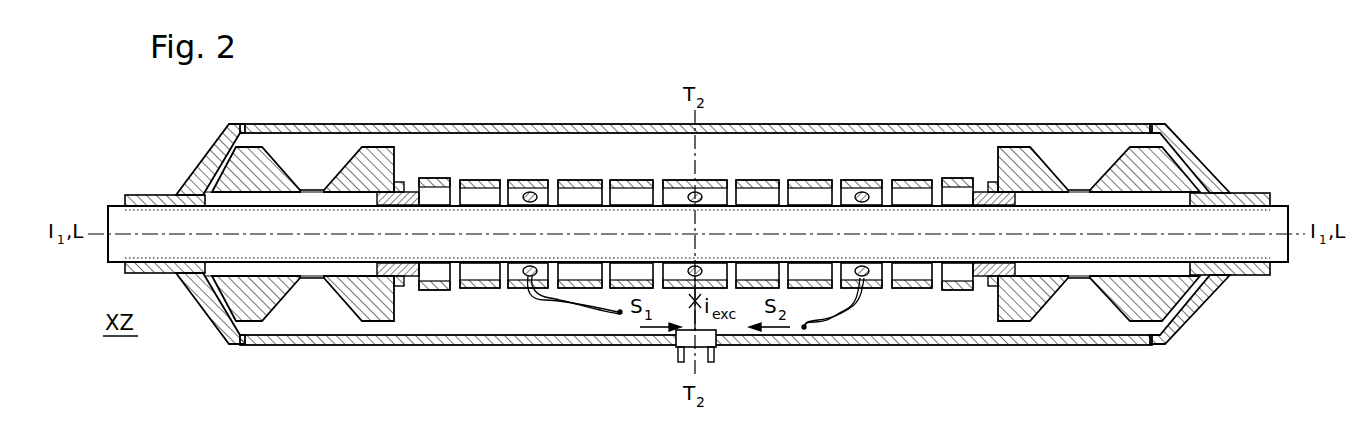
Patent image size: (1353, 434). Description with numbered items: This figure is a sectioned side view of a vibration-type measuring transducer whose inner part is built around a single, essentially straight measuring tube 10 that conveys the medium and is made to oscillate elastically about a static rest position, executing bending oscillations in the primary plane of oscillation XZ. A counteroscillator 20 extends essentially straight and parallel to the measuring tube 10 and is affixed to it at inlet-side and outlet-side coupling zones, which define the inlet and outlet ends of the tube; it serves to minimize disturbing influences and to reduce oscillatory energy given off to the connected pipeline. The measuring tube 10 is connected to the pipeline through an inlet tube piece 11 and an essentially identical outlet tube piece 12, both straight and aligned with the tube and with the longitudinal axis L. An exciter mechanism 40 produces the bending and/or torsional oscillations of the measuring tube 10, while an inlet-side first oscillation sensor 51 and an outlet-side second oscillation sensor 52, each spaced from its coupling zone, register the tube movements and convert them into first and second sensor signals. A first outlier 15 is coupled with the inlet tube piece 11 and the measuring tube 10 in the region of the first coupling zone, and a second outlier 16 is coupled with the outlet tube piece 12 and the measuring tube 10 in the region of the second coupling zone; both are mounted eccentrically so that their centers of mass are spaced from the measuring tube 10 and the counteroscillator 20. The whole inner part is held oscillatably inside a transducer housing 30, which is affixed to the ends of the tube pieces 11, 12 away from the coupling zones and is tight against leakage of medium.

The measuring tube 10 is at (434, 222).
The inlet tube piece 11 is at (178, 215).
The outlet tube piece 12 is at (1163, 216).
The first outlier 15 is at (366, 168).
The second outlier 16 is at (1143, 150).
The counteroscillator 20 is at (808, 182).
The transducer housing 30 is at (757, 127).
The exciter mechanism 40 is at (690, 190).
The first oscillation sensor 51 is at (532, 192).
The second oscillation sensor 52 is at (863, 192).